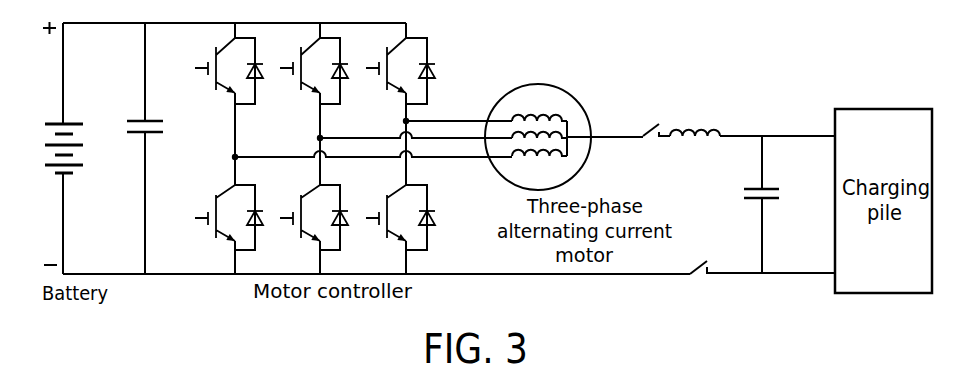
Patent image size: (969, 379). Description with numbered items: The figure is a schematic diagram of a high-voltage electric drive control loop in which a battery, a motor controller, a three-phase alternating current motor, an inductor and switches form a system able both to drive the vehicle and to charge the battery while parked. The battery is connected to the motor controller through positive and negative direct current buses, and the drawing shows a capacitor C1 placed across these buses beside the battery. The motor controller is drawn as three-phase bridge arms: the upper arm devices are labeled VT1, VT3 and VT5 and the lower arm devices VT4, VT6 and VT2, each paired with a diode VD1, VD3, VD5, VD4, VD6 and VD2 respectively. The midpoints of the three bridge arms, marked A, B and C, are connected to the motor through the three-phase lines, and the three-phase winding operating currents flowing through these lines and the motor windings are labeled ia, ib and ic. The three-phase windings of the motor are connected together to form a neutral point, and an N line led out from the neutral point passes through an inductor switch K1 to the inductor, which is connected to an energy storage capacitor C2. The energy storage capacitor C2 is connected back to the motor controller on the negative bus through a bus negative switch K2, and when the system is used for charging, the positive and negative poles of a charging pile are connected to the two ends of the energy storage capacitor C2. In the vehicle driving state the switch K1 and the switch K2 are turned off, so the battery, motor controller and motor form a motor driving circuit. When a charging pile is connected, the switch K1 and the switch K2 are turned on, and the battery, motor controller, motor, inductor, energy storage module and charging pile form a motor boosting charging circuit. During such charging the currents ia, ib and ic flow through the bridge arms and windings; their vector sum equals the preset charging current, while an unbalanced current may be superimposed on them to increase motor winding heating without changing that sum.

The IGBT switch VT1 is at (208, 65).
The IGBT switch VT2 is at (380, 212).
The IGBT switch VT3 is at (293, 65).
The IGBT switch VT4 is at (208, 212).
The IGBT switch VT5 is at (380, 65).
The IGBT switch VT6 is at (294, 212).
The freewheeling diode VD1 is at (273, 83).
The freewheeling diode VD2 is at (443, 231).
The freewheeling diode VD3 is at (358, 83).
The freewheeling diode VD4 is at (273, 231).
The freewheeling diode VD5 is at (443, 83).
The freewheeling diode VD6 is at (358, 231).
The battery-side capacitor C1 is at (152, 140).
The energy storage capacitor C2 is at (768, 204).
The inductor switch K1 is at (639, 124).
The bus negative switch K2 is at (689, 262).
The bridge arm midpoint A is at (245, 148).
The bridge arm midpoint B is at (328, 128).
The bridge arm midpoint C is at (395, 120).
The three-phase winding operating current ia is at (458, 150).
The three-phase winding operating current ib is at (458, 132).
The three-phase winding operating current ic is at (458, 113).